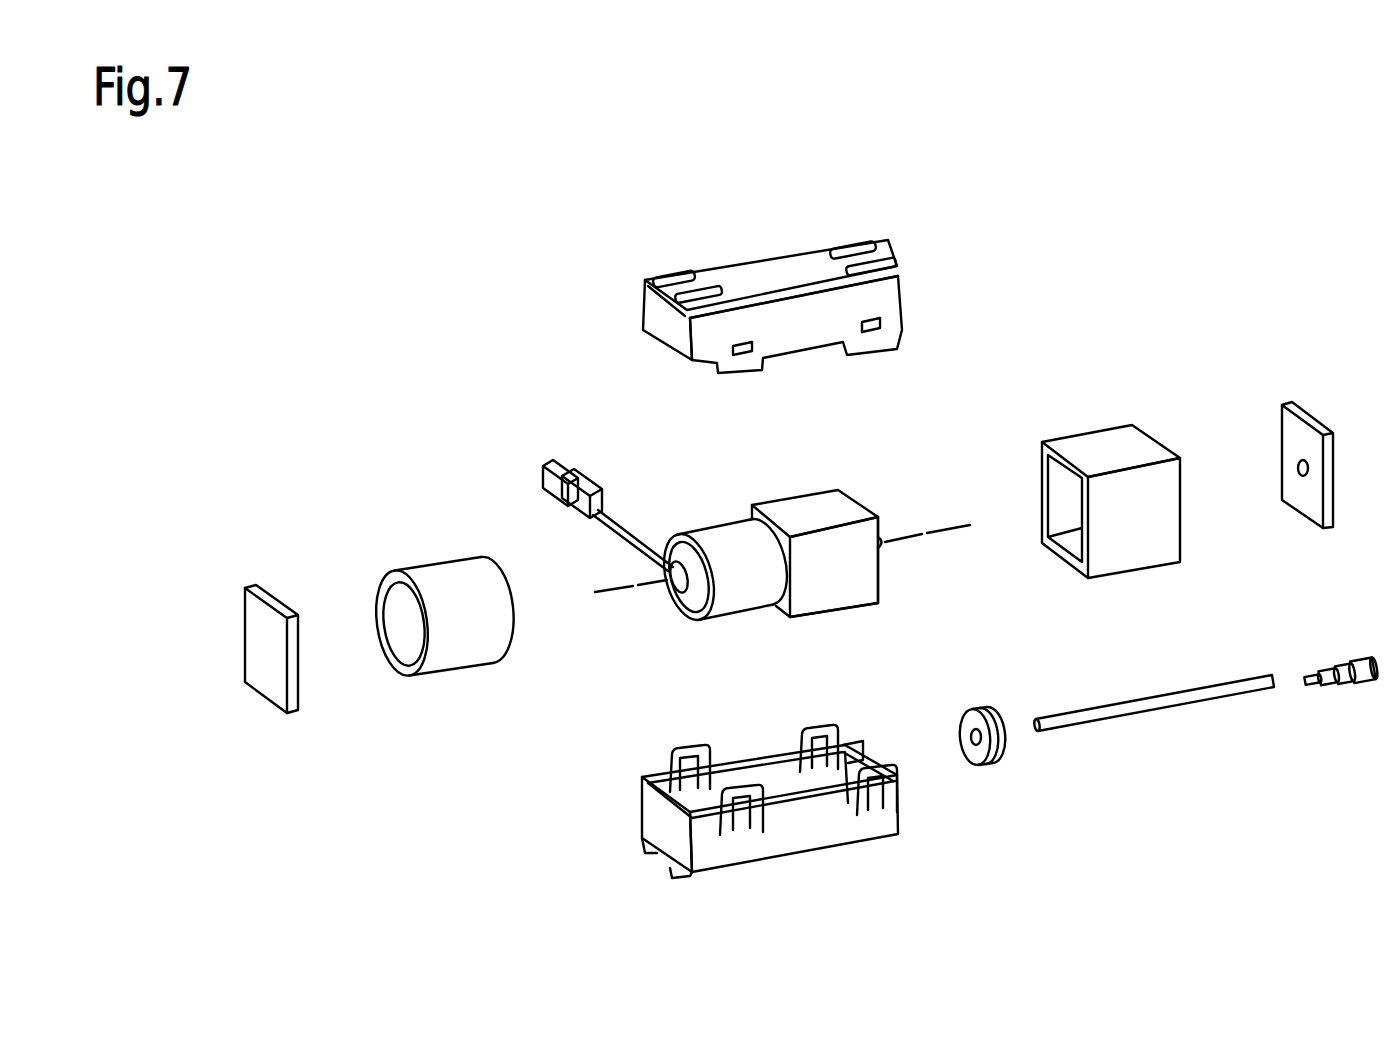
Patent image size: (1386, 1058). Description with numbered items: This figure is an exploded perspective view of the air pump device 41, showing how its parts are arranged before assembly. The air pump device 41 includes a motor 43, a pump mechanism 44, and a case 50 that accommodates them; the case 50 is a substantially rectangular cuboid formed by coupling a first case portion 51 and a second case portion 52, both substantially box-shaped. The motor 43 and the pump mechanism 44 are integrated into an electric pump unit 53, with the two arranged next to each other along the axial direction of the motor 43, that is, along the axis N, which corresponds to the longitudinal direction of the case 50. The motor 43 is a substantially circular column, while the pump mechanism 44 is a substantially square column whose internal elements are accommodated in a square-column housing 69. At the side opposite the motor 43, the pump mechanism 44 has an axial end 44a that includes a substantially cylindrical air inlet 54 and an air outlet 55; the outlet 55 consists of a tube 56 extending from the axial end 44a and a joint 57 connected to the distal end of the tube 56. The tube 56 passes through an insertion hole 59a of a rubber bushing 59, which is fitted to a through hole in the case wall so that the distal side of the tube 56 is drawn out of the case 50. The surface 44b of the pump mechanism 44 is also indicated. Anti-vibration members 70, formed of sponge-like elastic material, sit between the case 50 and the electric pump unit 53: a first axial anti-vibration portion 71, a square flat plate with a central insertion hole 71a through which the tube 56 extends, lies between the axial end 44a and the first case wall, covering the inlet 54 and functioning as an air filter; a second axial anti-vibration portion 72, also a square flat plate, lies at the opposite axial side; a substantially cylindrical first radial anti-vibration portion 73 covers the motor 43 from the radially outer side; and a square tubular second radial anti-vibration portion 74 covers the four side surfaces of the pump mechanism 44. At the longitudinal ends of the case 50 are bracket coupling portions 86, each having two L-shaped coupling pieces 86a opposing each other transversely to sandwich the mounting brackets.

The air pump device 41 is at (250, 195).
The motor 43 is at (723, 535).
The pump mechanism 44 is at (867, 552).
The axial end 44a is at (951, 565).
The bottom surface of gear box 44b is at (777, 617).
The case 50 is at (723, 528).
The first case portion 51 is at (645, 777).
The second case portion 52 is at (645, 338).
The electric pump unit 53 is at (916, 433).
The air inlet 54 is at (884, 532).
The air outlet 55 is at (1335, 780).
The tube 56 is at (1203, 708).
The joint 57 is at (1350, 688).
The rubber bushing 59 is at (985, 712).
The insertion hole 59a is at (975, 760).
The housing 69 is at (811, 503).
The anti-vibration members 70 is at (799, 525).
The first axial anti-vibration portion 71 is at (1293, 402).
The insertion hole 71a is at (1303, 476).
The second axial anti-vibration portion 72 is at (249, 585).
The first radial anti-vibration portion 73 is at (397, 572).
The second radial anti-vibration portion 74 is at (1133, 425).
The bracket coupling portions 86 is at (801, 241).
The coupling pieces 86a is at (672, 276).
The axis N is at (928, 533).